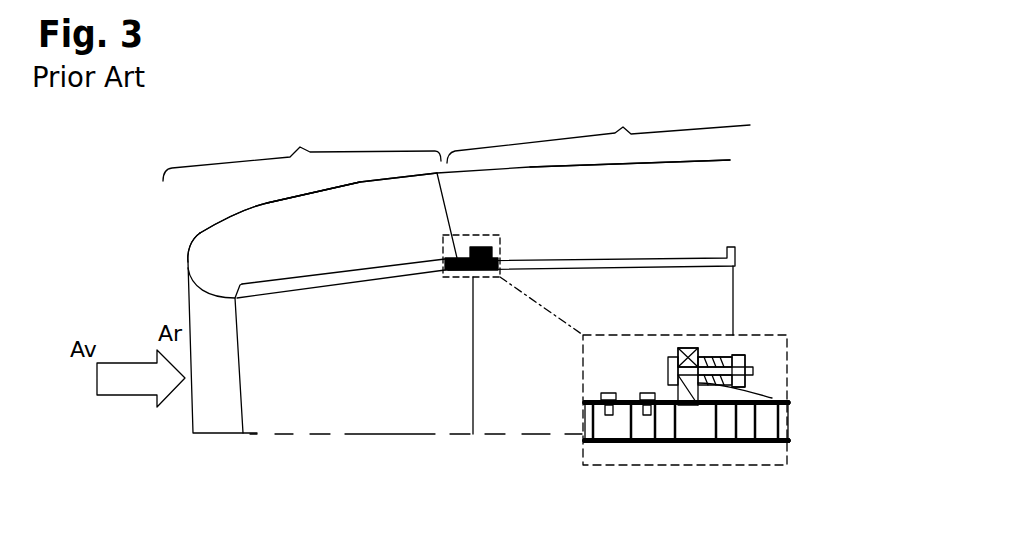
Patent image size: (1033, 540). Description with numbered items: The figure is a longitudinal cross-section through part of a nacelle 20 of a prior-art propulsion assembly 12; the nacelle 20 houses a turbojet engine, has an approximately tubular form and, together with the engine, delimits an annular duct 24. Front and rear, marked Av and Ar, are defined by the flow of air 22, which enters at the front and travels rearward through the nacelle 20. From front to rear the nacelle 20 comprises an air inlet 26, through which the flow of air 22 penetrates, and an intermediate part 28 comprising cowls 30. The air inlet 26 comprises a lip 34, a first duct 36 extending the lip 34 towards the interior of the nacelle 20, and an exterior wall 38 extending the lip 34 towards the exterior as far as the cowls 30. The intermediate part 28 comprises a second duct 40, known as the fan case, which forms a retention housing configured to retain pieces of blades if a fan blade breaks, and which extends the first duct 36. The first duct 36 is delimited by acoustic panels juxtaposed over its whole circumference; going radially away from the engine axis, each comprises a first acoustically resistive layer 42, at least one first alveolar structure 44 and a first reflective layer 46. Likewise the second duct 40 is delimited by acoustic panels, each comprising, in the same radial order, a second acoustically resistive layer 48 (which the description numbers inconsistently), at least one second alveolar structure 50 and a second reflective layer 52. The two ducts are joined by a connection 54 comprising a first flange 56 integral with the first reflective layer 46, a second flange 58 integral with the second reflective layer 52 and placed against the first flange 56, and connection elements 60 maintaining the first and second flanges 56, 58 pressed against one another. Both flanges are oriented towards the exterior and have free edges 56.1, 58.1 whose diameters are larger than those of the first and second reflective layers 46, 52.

The propulsion assembly 12 is at (153, 253).
The nacelle 20 is at (360, 182).
The flow of air 22 is at (127, 396).
The annular duct 24 is at (685, 375).
The air inlet 26 is at (302, 145).
The intermediate part 28 is at (598, 132).
The cowls 30 is at (678, 158).
The lip 34 is at (200, 233).
The first duct 36 is at (335, 286).
The exterior wall 38 is at (267, 203).
The second duct 40 is at (712, 267).
The first acoustically resistive layer 42 is at (660, 445).
The first alveolar structure 44 is at (583, 424).
The first reflective layer 46 is at (585, 395).
The back skin 48 is at (768, 443).
The second alveolar structure 50 is at (780, 420).
The second reflective layer 52 is at (772, 398).
The connection 54 is at (470, 228).
The first flange 56 is at (668, 388).
The free edge of first flange 56.1 is at (683, 347).
The second flange 58 is at (693, 405).
The free edge of second flange 58.1 is at (700, 355).
The connection elements 60 is at (755, 371).